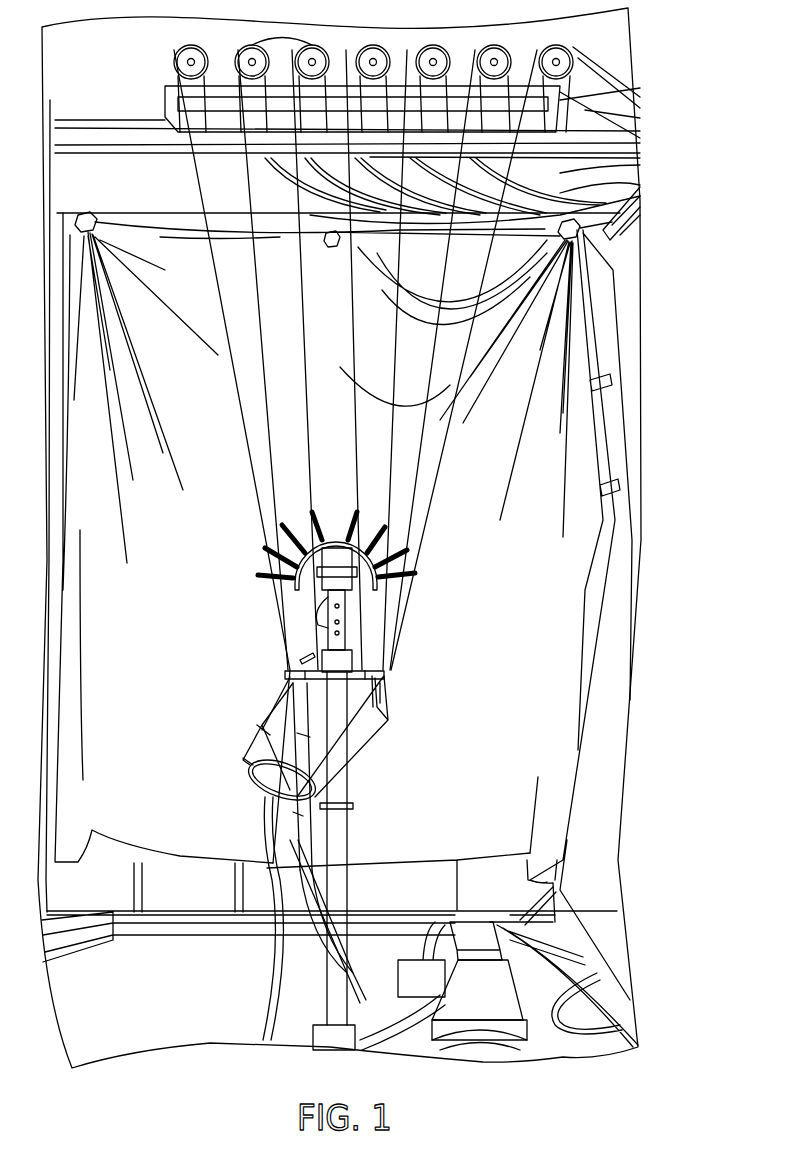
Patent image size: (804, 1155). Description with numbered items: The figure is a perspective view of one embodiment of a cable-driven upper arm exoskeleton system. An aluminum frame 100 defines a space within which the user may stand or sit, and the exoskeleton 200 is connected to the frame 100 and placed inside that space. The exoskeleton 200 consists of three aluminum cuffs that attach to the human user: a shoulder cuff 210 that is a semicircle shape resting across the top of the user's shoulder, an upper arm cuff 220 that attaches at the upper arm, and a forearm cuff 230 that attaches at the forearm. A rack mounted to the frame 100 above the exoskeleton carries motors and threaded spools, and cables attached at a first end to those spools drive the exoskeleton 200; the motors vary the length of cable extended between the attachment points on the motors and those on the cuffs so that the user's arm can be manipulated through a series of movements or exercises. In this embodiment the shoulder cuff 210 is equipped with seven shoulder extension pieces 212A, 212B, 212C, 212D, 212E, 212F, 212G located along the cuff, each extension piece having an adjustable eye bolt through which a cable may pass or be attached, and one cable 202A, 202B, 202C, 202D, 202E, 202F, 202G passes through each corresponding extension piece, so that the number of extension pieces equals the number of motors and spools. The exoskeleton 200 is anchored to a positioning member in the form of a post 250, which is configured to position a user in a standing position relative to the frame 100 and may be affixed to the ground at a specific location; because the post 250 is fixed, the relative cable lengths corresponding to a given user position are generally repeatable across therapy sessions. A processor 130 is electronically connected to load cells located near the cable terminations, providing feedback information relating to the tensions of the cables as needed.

The frame 100 is at (119, 146).
The cable 202A is at (213, 298).
The cable 202B is at (256, 347).
The cable 202C is at (305, 393).
The cable 202D is at (350, 433).
The cable 202E is at (410, 296).
The cable 202F is at (437, 340).
The cable 202G is at (450, 432).
The shoulder cuff 210 is at (290, 583).
The shoulder extension piece 212A is at (258, 575).
The shoulder extension piece 212B is at (258, 547).
The shoulder extension piece 212C is at (305, 512).
The shoulder extension piece 212D is at (365, 513).
The shoulder extension piece 212E is at (392, 527).
The shoulder extension piece 212F is at (410, 557).
The shoulder extension piece 212G is at (418, 578).
The exoskeleton 200 is at (393, 700).
The upper arm cuff 220 is at (295, 682).
The forearm cuff 230 is at (250, 775).
The post 250 is at (347, 847).
The processor 130 is at (535, 952).